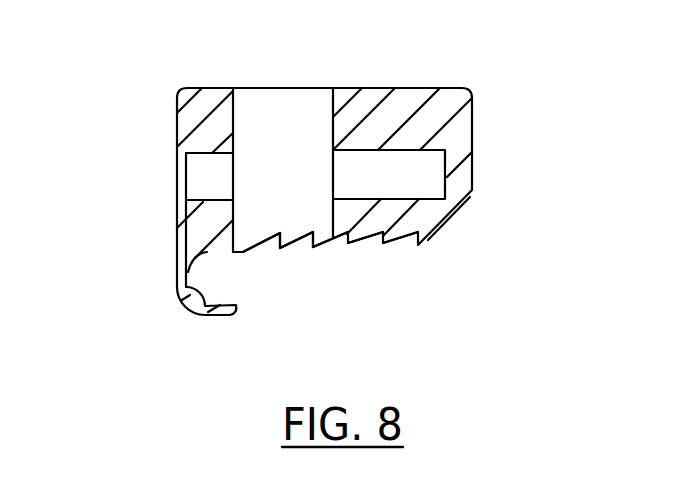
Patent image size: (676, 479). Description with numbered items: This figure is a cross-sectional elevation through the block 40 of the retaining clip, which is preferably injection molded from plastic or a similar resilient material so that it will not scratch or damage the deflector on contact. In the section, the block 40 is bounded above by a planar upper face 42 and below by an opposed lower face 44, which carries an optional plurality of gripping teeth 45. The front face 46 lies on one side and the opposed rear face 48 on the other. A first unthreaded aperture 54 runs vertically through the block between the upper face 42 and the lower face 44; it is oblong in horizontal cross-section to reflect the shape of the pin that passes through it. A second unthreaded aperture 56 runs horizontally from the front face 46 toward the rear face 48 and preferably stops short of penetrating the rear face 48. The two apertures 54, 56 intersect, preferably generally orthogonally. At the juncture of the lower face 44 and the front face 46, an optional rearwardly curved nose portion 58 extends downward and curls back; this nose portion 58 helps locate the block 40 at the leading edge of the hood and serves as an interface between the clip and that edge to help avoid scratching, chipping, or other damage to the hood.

The block 40 is at (153, 181).
The upper face 42 is at (422, 88).
The lower face 44 is at (386, 258).
The gripping teeth 45 is at (283, 247).
The front face 46 is at (177, 127).
The rear face 48 is at (472, 118).
The first unthreaded aperture 54 is at (318, 66).
The second unthreaded aperture 56 is at (217, 185).
The nose portion 58 is at (186, 309).